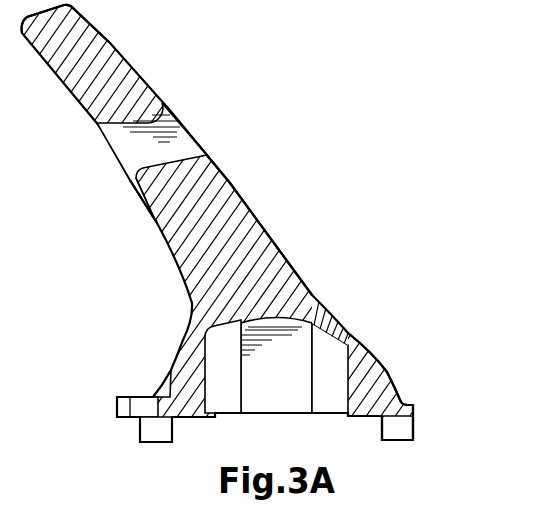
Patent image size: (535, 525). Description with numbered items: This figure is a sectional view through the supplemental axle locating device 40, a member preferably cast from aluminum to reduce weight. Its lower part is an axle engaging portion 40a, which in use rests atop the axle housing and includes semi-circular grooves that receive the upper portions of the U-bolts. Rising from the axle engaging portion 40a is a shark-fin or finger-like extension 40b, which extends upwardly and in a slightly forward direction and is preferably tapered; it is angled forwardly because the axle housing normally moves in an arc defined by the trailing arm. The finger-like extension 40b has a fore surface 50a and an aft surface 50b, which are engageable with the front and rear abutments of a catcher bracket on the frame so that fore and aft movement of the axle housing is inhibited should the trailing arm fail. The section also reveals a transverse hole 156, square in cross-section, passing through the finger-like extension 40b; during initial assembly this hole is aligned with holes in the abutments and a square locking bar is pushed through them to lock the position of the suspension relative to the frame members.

The supplemental axle locating device 40 is at (303, 207).
The axle engaging portion 40a is at (370, 342).
The finger-like extension 40b is at (108, 40).
The fore surface 50a is at (148, 222).
The aft surface 50b is at (231, 183).
The transverse hole 156 is at (118, 126).